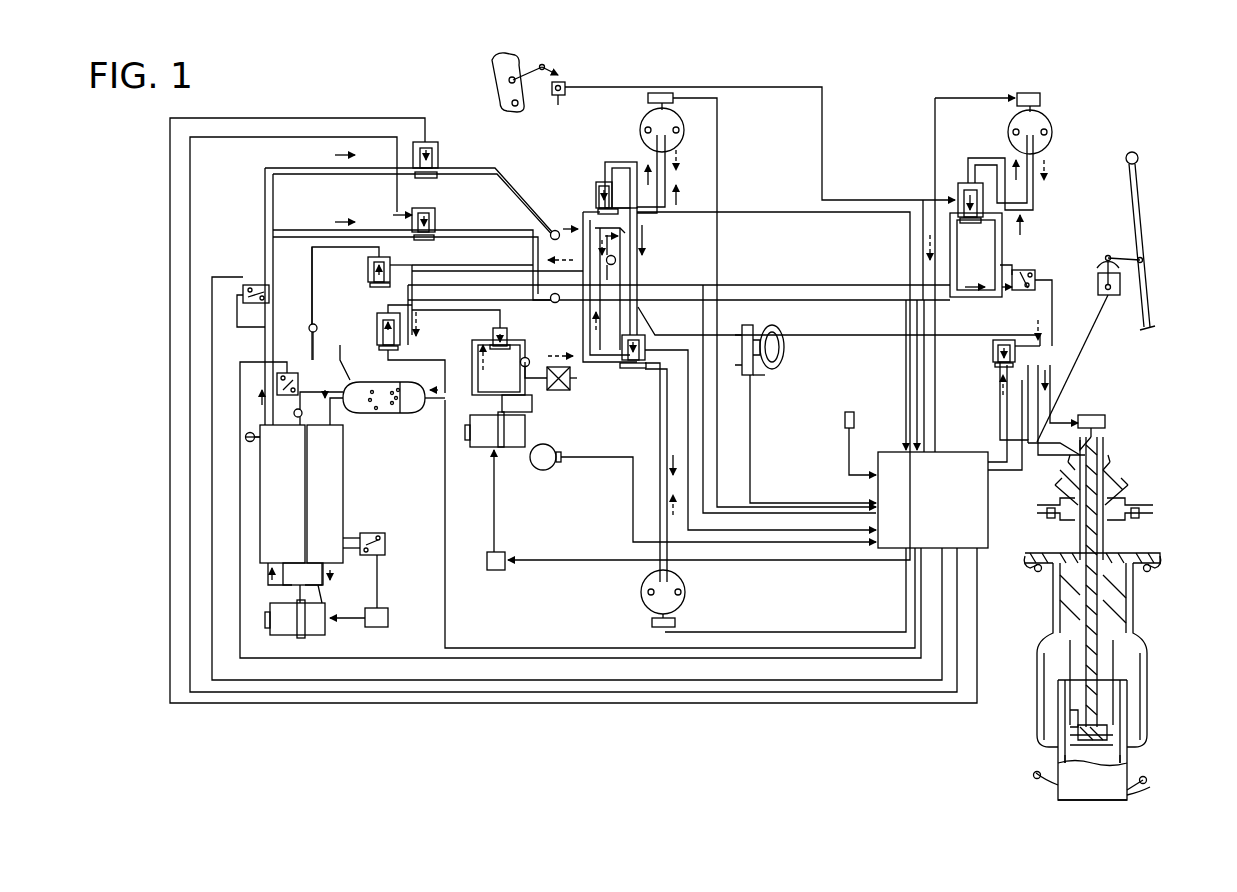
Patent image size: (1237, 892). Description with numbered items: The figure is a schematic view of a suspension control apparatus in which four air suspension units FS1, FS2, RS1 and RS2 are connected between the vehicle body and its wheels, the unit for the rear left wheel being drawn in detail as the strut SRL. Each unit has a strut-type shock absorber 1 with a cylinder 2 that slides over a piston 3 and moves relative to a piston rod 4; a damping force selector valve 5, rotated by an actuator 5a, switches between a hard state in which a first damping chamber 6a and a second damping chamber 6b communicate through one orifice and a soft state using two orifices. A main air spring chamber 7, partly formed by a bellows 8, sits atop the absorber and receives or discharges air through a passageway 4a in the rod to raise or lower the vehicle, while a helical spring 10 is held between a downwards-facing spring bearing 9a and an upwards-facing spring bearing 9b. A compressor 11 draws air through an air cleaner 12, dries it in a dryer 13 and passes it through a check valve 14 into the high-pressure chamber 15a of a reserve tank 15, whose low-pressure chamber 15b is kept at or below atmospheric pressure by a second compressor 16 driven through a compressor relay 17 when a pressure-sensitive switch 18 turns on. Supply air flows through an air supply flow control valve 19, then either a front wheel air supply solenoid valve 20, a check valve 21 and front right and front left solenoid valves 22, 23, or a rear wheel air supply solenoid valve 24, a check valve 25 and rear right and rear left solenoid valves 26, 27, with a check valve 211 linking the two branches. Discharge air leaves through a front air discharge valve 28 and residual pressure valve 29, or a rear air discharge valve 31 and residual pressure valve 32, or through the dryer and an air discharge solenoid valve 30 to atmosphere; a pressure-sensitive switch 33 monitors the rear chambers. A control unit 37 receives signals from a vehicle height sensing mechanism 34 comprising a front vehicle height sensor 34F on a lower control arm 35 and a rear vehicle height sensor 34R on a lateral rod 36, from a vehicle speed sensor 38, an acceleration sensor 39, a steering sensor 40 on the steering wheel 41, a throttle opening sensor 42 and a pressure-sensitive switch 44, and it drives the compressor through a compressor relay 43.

The strut-type shock absorber 1 is at (1080, 790).
The cylinder 2 is at (1128, 710).
The piston 3 is at (1110, 732).
The piston rod 4 is at (1128, 615).
The passageway 4a is at (1104, 530).
The damping force selector valve 5 is at (1115, 745).
The actuator 5a is at (664, 93).
The first damping chamber 6a is at (1065, 688).
The second damping chamber 6b is at (1065, 765).
The main air spring chamber 7 is at (1105, 640).
The bellows 8 is at (1148, 685).
The downwards-facing spring bearing 9a is at (1160, 553).
The upwards-facing spring bearing 9b is at (1148, 790).
The helical spring 10 is at (1152, 568).
The compressor 11 is at (514, 447).
The air cleaner 12 is at (558, 390).
The dryer 13 is at (388, 413).
The check valve 14 is at (262, 408).
The reserve tank 15 is at (260, 560).
The high-pressure chamber 15a is at (260, 510).
The low-pressure chamber 15b is at (343, 487).
The compressor 16 is at (320, 635).
The compressor relay 17 is at (388, 616).
The pressure-sensitive switch 18 is at (385, 540).
The air supply flow control valve 19 is at (270, 292).
The front wheel air supply solenoid valve 20 is at (438, 150).
The check valve 21 is at (553, 230).
The front right solenoid valve 22 is at (598, 186).
The front left solenoid valve 23 is at (632, 370).
The rear wheel air supply solenoid valve 24 is at (435, 212).
The check valve 25 is at (556, 303).
The rear right solenoid valve 26 is at (962, 183).
The rear left solenoid valve 27 is at (1013, 342).
The front air discharge valve 28 is at (392, 262).
The residual pressure valve 29 is at (316, 325).
The air discharge solenoid valve 30 is at (500, 370).
The rear air discharge valve 31 is at (400, 340).
The residual pressure valve 32 is at (355, 368).
The pressure-sensitive switch 33 is at (1025, 270).
The vehicle height sensing mechanism 34 is at (566, 82).
The front vehicle height sensor 34F is at (558, 103).
The rear vehicle height sensor 34R is at (1098, 268).
The lower control arm 35 is at (492, 78).
The lateral rod 36 is at (1150, 285).
The control unit 37 is at (940, 452).
The vehicle speed sensor 38 is at (760, 375).
The acceleration sensor 39 is at (854, 425).
The steering sensor 40 is at (770, 372).
The steering wheel 41 is at (785, 350).
The throttle opening sensor 42 is at (553, 466).
The compressor relay 43 is at (503, 552).
The pressure-sensitive switch 44 is at (309, 330).
The check valve 211 is at (616, 262).
The front left air suspension unit FS1 is at (687, 590).
The front right air suspension unit FS2 is at (645, 120).
The rear left air suspension unit RS1 is at (1095, 415).
The rear right air suspension unit RS2 is at (1052, 130).
The rear left strut SRL is at (1130, 470).